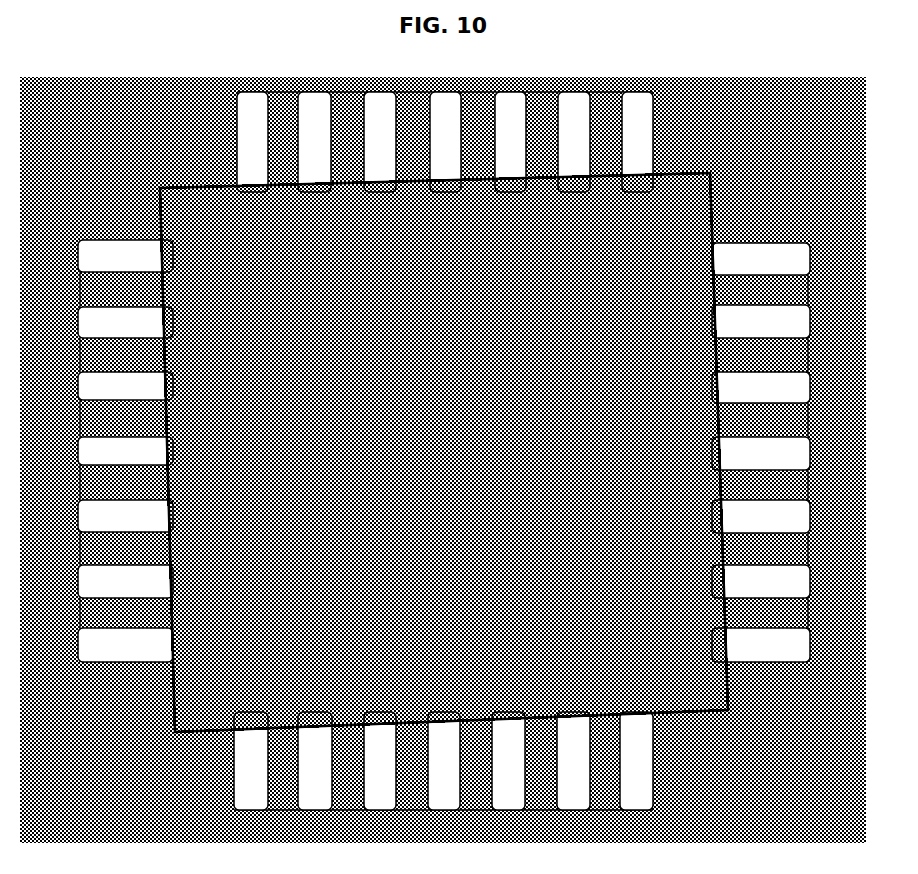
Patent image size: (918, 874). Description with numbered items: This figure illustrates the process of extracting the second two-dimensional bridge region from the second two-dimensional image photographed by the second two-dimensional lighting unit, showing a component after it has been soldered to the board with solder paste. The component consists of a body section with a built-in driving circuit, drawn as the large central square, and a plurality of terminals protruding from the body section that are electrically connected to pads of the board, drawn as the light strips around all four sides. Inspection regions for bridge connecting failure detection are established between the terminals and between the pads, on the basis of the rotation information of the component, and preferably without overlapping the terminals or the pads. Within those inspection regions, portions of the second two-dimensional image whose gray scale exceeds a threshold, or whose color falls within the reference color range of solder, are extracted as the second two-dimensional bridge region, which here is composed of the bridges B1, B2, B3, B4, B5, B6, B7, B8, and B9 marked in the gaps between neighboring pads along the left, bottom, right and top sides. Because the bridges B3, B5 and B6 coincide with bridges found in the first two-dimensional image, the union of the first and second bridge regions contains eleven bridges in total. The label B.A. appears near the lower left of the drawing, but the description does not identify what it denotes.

The bridge B1 is at (120, 402).
The bridge B2 is at (160, 725).
The bridge B3 is at (266, 761).
The bridge B4 is at (330, 761).
The bridge B5 is at (770, 439).
The bridge B6 is at (770, 374).
The bridge B7 is at (525, 132).
The bridge B8 is at (460, 132).
The bridge B9 is at (397, 132).
The bonding area B.A. is at (86, 612).